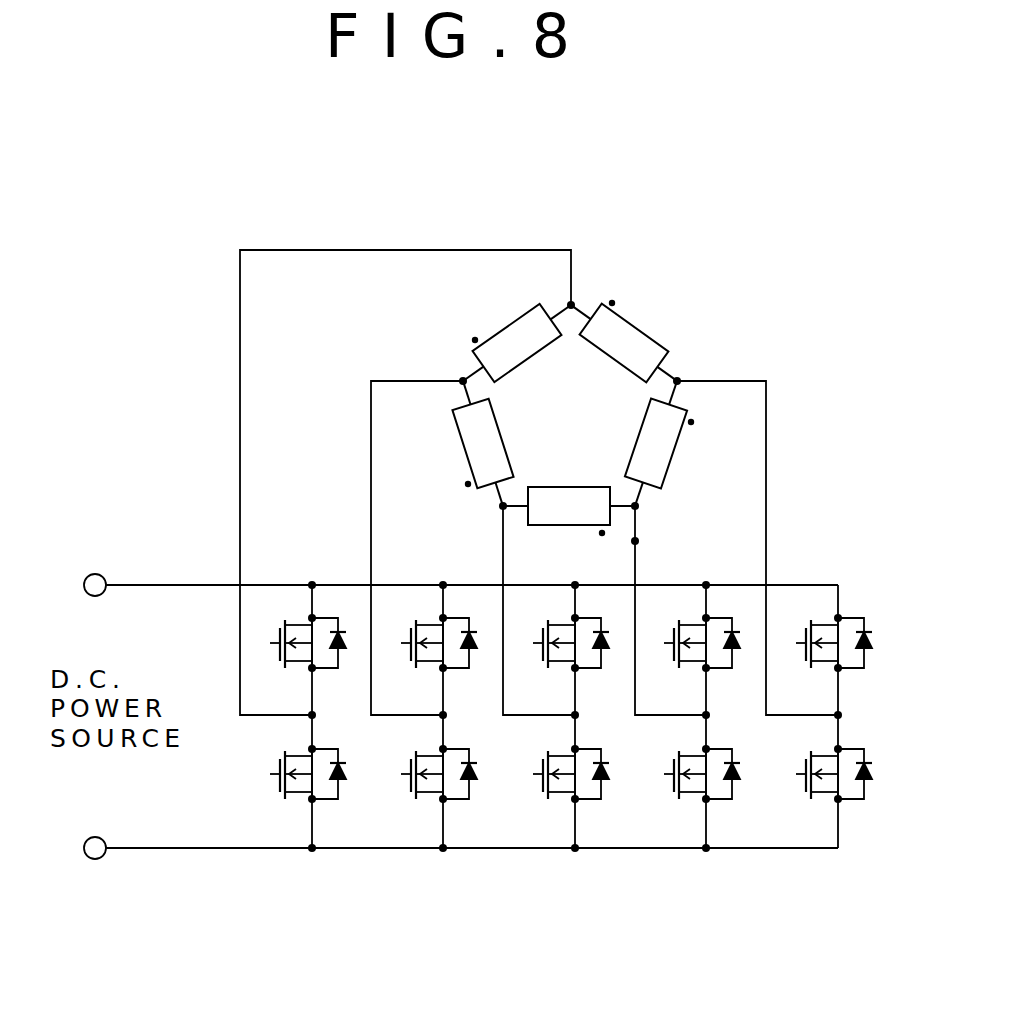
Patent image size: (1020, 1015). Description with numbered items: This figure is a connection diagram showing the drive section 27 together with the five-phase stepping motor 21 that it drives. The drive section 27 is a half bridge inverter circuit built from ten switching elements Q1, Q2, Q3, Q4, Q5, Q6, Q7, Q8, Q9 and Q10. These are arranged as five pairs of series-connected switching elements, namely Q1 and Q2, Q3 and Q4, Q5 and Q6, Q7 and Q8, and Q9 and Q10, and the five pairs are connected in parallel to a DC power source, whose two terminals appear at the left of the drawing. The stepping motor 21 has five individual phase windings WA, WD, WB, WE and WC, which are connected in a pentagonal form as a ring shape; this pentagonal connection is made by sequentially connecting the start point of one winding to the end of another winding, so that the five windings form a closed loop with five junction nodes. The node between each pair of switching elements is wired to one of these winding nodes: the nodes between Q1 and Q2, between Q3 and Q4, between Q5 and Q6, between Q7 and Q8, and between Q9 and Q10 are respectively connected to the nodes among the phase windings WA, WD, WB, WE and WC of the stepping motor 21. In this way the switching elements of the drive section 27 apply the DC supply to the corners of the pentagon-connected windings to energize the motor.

The 5-phase stepping motor 21 is at (552, 238).
The drive section 27 is at (492, 858).
The switching element Q1 is at (294, 631).
The switching element Q2 is at (294, 761).
The switching element Q3 is at (425, 631).
The switching element Q4 is at (425, 761).
The switching element Q5 is at (557, 631).
The switching element Q6 is at (557, 761).
The switching element Q7 is at (688, 631).
The switching element Q8 is at (688, 761).
The switching element Q9 is at (820, 631).
The switching element Q10 is at (819, 761).
The phase winding WA is at (517, 343).
The phase winding WB is at (656, 443).
The phase winding WC is at (483, 443).
The phase winding WD is at (623, 343).
The phase winding WE is at (569, 506).